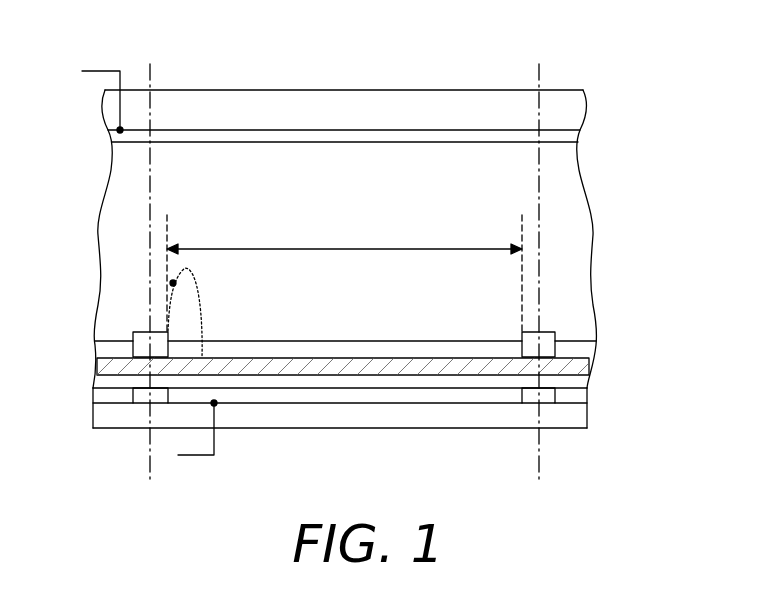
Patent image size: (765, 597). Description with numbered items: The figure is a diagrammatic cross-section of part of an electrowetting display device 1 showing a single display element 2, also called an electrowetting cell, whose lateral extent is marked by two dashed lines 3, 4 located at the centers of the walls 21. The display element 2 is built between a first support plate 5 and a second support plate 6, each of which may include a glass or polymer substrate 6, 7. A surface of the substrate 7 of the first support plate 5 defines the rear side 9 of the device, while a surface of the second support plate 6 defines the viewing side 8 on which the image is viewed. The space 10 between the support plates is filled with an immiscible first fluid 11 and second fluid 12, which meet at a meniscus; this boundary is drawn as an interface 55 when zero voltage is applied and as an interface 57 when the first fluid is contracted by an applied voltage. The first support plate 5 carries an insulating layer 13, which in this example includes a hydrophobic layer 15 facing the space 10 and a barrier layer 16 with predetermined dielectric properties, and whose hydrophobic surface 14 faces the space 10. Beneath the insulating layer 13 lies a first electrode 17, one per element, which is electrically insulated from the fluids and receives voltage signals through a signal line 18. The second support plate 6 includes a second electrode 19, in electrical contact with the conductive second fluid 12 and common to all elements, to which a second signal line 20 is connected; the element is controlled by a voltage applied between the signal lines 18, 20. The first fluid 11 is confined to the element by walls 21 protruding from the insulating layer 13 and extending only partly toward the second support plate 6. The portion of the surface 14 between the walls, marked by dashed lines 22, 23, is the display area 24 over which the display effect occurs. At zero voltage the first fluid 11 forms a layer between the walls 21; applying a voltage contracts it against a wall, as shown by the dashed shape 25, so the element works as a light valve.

The electrowetting display device 1 is at (642, 61).
The display element 2 is at (328, 50).
The dashed line 3 is at (151, 72).
The dashed line 4 is at (540, 72).
The first support plate 5 is at (371, 381).
The second support plate 6 is at (370, 93).
The substrate 7 is at (340, 439).
The viewing side 8 is at (243, 88).
The rear side 9 is at (306, 432).
The space 10 is at (411, 156).
The first fluid 11 is at (488, 349).
The second fluid 12 is at (583, 225).
The insulating layer 13 is at (367, 340).
The surface 14 is at (390, 360).
The hydrophobic layer 15 is at (341, 368).
The barrier layer 16 is at (293, 378).
The first electrode 17 is at (413, 397).
The signal line 18 is at (199, 459).
The second electrode 19 is at (140, 137).
The second signal line 20 is at (98, 68).
The walls 21 is at (143, 346).
The dashed line 22 is at (520, 219).
The dashed line 23 is at (170, 218).
The display area 24 is at (344, 239).
The dashed shape 25 is at (176, 282).
The interface 55 is at (439, 341).
The interface 57 is at (200, 305).